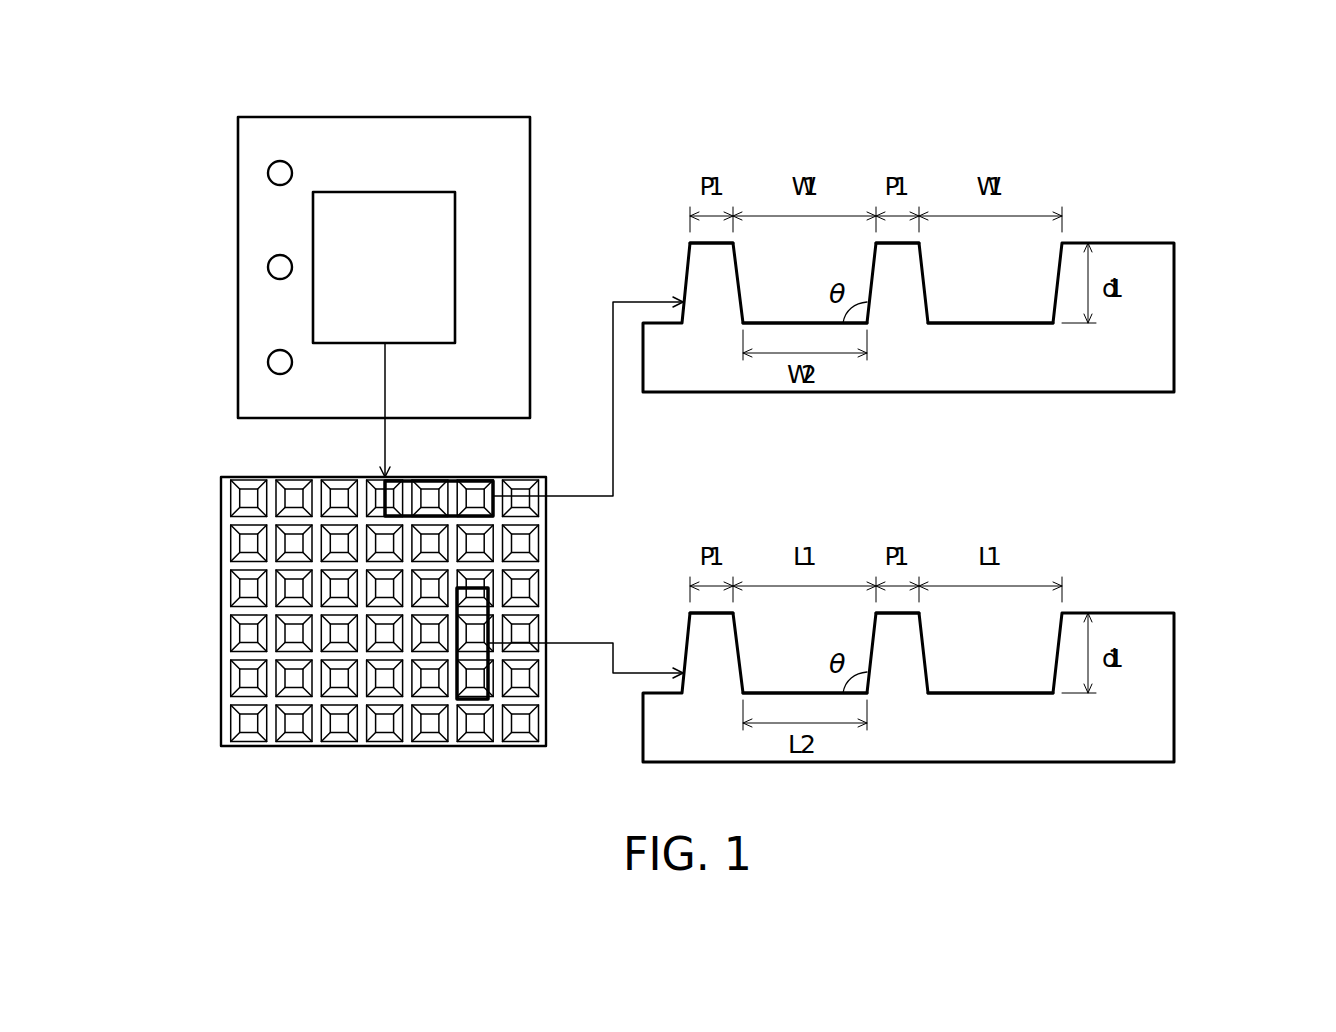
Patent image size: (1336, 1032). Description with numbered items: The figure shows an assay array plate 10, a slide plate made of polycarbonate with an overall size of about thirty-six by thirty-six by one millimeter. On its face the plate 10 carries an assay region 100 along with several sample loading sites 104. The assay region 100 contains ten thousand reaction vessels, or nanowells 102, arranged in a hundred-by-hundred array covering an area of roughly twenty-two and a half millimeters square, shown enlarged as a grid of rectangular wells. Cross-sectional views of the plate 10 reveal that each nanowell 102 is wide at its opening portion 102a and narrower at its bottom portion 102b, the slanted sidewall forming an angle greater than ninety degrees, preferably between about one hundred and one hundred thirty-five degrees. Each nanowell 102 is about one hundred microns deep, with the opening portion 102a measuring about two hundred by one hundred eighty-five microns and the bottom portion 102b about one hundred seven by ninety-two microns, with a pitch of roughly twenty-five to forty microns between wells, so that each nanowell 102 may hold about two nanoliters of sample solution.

The assay array plate 10 is at (488, 102).
The assay region 100 is at (385, 192).
The reaction vessel (nanowell) 102 is at (250, 727).
The opening portion 102a is at (925, 240).
The bottom portion 102b is at (939, 306).
The sample loading sites 104 is at (268, 267).